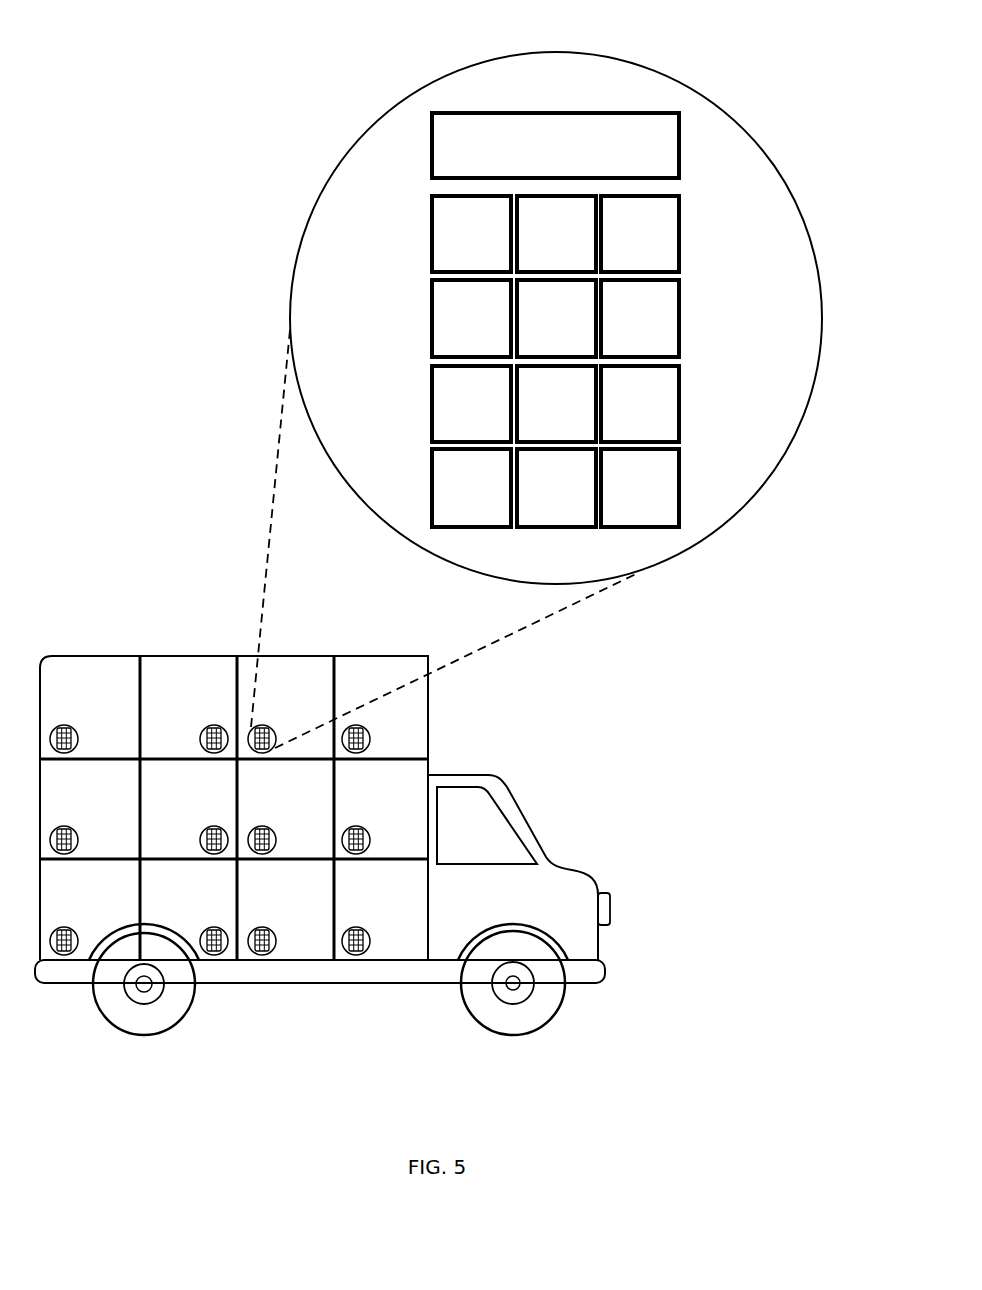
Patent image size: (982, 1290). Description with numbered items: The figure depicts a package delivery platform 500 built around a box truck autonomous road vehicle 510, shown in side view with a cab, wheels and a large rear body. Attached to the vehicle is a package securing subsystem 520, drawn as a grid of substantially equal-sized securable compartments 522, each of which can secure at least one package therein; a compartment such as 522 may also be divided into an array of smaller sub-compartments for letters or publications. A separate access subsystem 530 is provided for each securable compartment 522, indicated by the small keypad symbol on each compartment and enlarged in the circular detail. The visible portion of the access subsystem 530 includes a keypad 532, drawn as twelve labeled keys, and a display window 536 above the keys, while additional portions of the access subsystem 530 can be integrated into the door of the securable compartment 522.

The delivery platform 500 is at (100, 42).
The box truck autonomous road vehicle 510 is at (633, 897).
The package securing subsystem 520 is at (117, 638).
The securable compartment 522 is at (248, 657).
The access subsystem 530 is at (333, 201).
The keypad 532 is at (418, 302).
The display window 536 is at (540, 157).